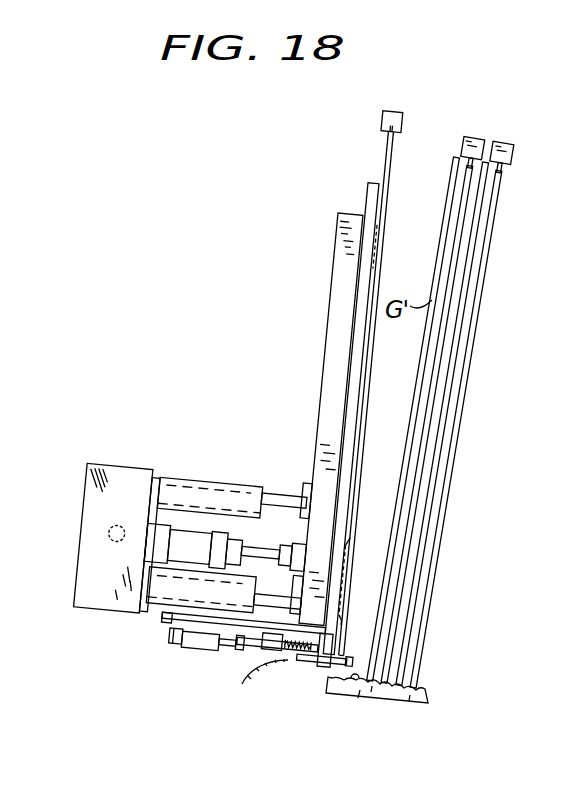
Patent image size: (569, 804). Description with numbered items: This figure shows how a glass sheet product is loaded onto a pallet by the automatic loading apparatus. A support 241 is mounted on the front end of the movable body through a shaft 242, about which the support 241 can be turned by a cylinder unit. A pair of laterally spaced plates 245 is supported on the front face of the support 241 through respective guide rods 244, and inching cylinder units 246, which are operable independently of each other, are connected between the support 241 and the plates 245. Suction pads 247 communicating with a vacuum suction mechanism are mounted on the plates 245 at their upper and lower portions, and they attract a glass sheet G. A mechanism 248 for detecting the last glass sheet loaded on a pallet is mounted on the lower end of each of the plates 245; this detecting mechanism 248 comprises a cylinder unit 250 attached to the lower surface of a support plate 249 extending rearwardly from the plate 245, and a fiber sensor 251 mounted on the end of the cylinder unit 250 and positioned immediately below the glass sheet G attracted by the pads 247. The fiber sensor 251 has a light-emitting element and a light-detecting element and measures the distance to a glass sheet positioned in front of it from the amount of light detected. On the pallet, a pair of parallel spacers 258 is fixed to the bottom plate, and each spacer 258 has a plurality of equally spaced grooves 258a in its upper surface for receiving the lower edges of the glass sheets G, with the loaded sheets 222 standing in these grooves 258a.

The glass sheets / packages 222 is at (395, 107).
The support 241 is at (85, 520).
The shaft 242 is at (110, 540).
The guide rods 244 is at (270, 593).
The plates 245 is at (330, 287).
The inching cylinder units 246 is at (198, 537).
The suction pads 247 is at (380, 233).
The detecting mechanism 248 is at (211, 665).
The support plate 249 is at (160, 613).
The cylinder unit 250 is at (193, 640).
The fiber sensor 251 is at (330, 663).
The spacers 258 is at (398, 695).
The grooves 258a is at (355, 679).
The glass sheet G is at (388, 140).